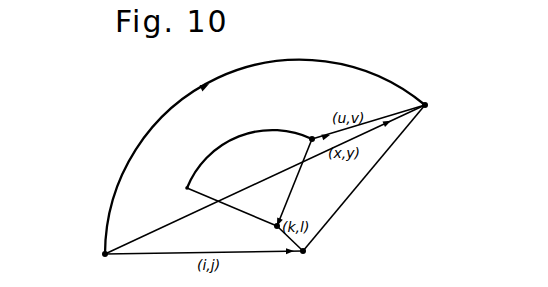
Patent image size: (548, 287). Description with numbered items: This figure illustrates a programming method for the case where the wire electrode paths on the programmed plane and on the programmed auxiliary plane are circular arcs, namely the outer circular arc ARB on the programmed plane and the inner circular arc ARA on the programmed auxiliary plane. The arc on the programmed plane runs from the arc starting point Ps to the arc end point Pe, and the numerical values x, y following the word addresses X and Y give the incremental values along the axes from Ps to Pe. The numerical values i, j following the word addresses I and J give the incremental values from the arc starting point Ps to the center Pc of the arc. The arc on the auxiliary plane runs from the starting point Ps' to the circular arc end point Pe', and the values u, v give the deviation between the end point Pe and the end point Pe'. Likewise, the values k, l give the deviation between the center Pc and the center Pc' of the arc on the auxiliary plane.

The circular arc on the programmed auxiliary plane ARA is at (213, 152).
The circular arc on the programmed plane ARB is at (267, 62).
The arc starting point Ps is at (110, 264).
The arc end point Pe is at (438, 105).
The center of the arc Pc is at (315, 259).
The arc starting point on the programmed auxiliary plane Ps' is at (175, 195).
The circular arc end point on the programmed auxiliary plane Pe' is at (311, 126).
The center of the circular arc on the programmed auxiliary plane Pc' is at (264, 235).